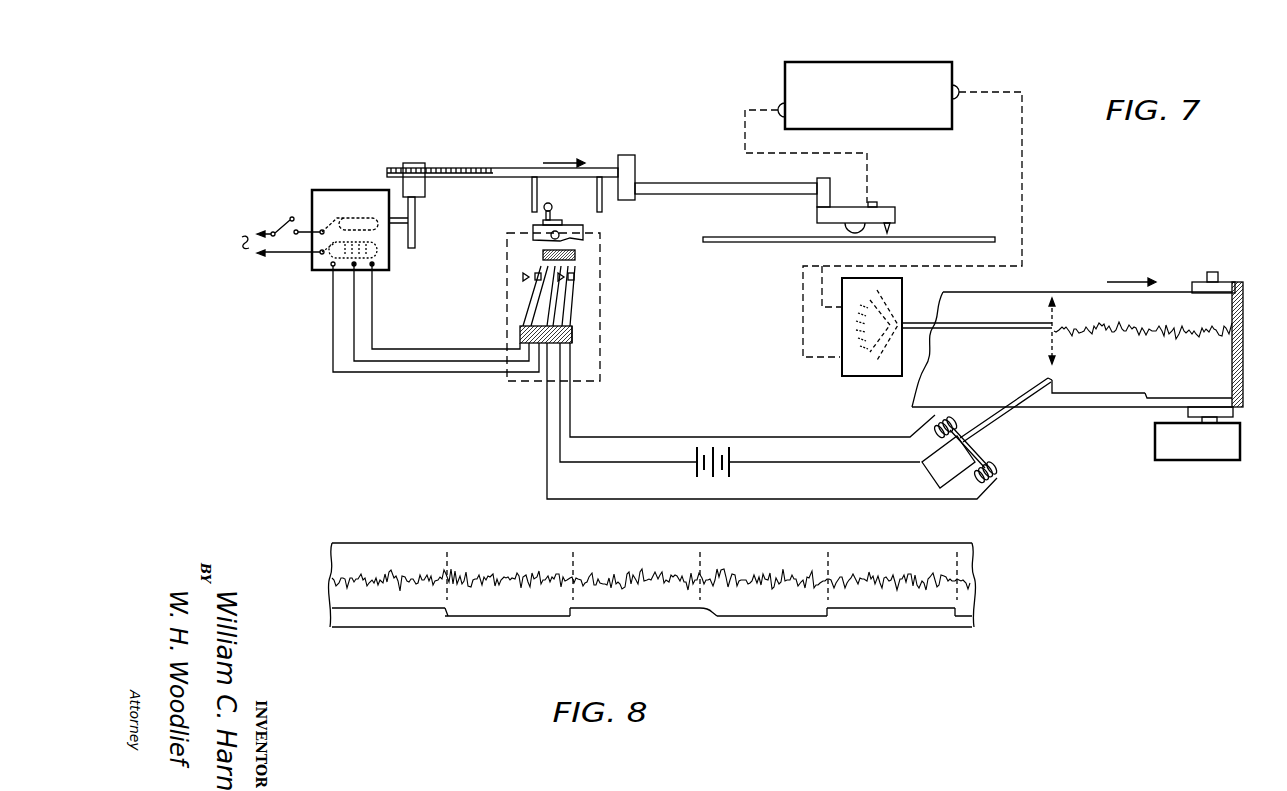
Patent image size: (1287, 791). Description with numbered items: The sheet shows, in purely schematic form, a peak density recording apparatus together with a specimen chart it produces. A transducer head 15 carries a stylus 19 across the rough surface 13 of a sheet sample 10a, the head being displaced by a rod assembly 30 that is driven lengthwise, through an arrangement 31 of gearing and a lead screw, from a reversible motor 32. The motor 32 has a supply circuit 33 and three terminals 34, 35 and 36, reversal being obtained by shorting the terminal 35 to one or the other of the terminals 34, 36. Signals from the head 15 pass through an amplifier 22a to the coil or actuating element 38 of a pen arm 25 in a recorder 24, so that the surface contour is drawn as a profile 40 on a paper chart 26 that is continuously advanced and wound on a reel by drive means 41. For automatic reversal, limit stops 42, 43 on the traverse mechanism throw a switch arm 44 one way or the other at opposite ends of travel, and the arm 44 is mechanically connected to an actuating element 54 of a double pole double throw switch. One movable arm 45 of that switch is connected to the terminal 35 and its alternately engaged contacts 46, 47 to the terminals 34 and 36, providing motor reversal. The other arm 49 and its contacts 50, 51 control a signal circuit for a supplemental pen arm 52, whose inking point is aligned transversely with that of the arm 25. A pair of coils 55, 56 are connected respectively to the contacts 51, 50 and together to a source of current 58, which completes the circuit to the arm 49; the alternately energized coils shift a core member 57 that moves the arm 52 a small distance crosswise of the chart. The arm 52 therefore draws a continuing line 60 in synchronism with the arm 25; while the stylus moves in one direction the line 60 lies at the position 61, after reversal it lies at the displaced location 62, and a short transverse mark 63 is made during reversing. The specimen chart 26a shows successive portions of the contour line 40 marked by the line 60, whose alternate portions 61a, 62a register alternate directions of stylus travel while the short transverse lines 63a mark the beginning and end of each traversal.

In FIG. 7, the reversible motor 32 is at (358, 188).
In FIG. 7, the supply circuit 33 is at (288, 247).
In FIG. 7, the motor terminal 34 is at (325, 270).
In FIG. 7, the motor terminal 35 is at (348, 268).
In FIG. 7, the motor terminal 36 is at (378, 268).
In FIG. 7, the gearing and lead screw arrangement 31 is at (437, 200).
In FIG. 7, the rod assembly 30 is at (653, 182).
In FIG. 7, the limit stop 42 is at (530, 197).
In FIG. 7, the limit stop 43 is at (603, 203).
In FIG. 7, the switch arm 44 is at (555, 215).
In FIG. 7, the actuating element 54 is at (575, 257).
In FIG. 7, the switch contact 46 is at (520, 288).
In FIG. 7, the movable arm 45 is at (540, 300).
In FIG. 7, the switch contact 47 is at (543, 315).
In FIG. 7, the switch contact 51 is at (580, 283).
In FIG. 7, the switch arm 49 is at (600, 297).
In FIG. 7, the switch contact 50 is at (573, 320).
In FIG. 7, the amplifier 22a is at (857, 65).
In FIG. 7, the transducer head 15 is at (887, 205).
In FIG. 7, the stylus 19 is at (890, 230).
In FIG. 7, the rough surface 13 is at (938, 235).
In FIG. 7, the sheet sample 10a is at (760, 243).
In FIG. 7, the coil or actuating element 38 is at (842, 328).
In FIG. 7, the recorder 24 is at (863, 392).
In FIG. 7, the pen arm 25 is at (908, 323).
In FIG. 7, the profile 40 is at (1103, 328).
In FIG. 8, the profile 40 is at (613, 577).
In FIG. 7, the continuing line 60 is at (1122, 381).
In FIG. 8, the continuing line 60 is at (651, 620).
In FIG. 7, the line position 61 is at (1077, 392).
In FIG. 7, the displaced line location 62 is at (1187, 397).
In FIG. 7, the paper chart 26 is at (1118, 400).
In FIG. 7, the transverse mark 63 is at (1147, 397).
In FIG. 7, the drive means 41 is at (1227, 452).
In FIG. 7, the source of current 58 is at (712, 447).
In FIG. 7, the coil 55 is at (957, 430).
In FIG. 7, the core member 57 is at (975, 456).
In FIG. 7, the supplemental pen arm 52 is at (1028, 400).
In FIG. 7, the coil 56 is at (1000, 470).
In FIG. 8, the chart 26a is at (478, 547).
In FIG. 8, the line portion 61a is at (398, 608).
In FIG. 8, the line portion 62a is at (518, 617).
In FIG. 8, the transverse line 63a is at (443, 613).